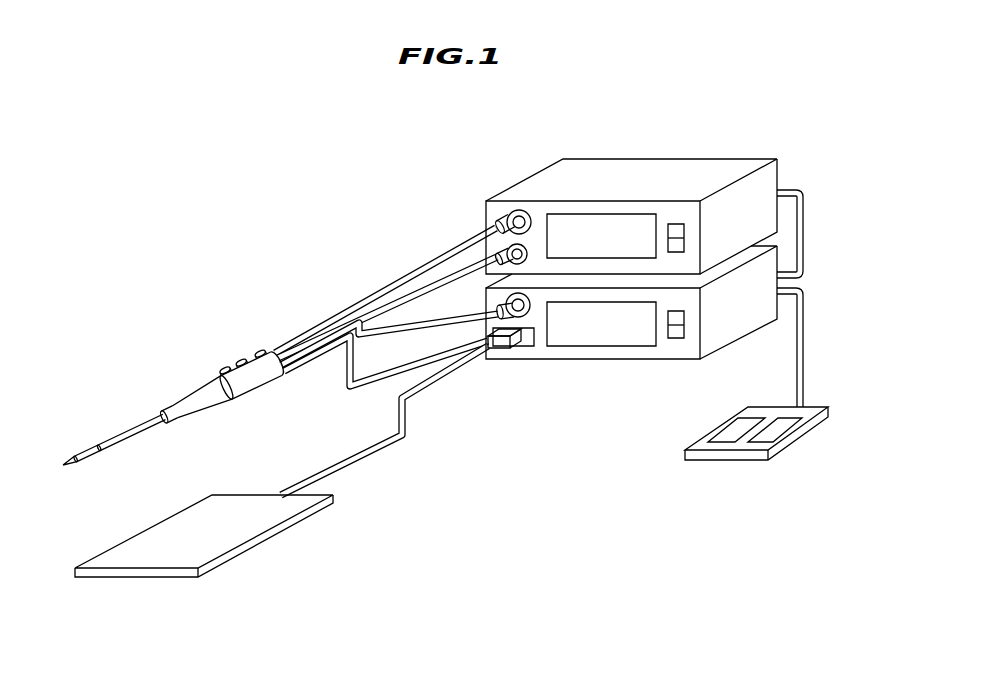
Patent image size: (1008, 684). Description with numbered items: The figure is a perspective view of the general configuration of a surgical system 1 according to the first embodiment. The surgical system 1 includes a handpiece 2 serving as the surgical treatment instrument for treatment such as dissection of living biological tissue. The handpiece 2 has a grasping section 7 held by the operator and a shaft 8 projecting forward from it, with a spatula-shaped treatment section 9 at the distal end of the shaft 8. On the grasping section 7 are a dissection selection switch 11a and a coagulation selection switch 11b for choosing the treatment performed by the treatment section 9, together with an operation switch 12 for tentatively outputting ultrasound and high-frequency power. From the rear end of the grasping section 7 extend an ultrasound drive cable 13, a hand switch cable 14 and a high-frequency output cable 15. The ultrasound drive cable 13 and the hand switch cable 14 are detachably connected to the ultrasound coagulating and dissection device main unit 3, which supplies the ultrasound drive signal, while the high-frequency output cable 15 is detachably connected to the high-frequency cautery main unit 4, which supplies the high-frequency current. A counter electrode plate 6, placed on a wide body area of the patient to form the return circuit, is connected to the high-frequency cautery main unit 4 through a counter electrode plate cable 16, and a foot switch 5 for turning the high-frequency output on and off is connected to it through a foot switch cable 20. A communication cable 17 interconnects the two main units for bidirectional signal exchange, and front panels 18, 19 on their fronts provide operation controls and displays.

The surgical system 1 is at (236, 230).
The handpiece 2 is at (221, 324).
The ultrasound coagulating and dissection device main unit 3 is at (631, 194).
The high-frequency cautery main unit 4 is at (631, 331).
The foot switch 5 is at (700, 442).
The counter electrode plate 6 is at (267, 539).
The grasping section 7 is at (252, 392).
The shaft 8 is at (130, 426).
The treatment section 9 is at (70, 458).
The dissection selection switch 11a is at (227, 369).
The coagulation selection switch 11b is at (246, 359).
The operation switch 12 is at (267, 351).
The ultrasound drive cable 13 is at (387, 288).
The hand switch cable 14 is at (396, 306).
The high-frequency output cable 15 is at (345, 397).
The counter electrode plate cable 16 is at (372, 448).
The communication cable 17 is at (791, 186).
The front panel 18 is at (569, 223).
The front panel 19 is at (558, 334).
The foot switch cable 20 is at (792, 345).